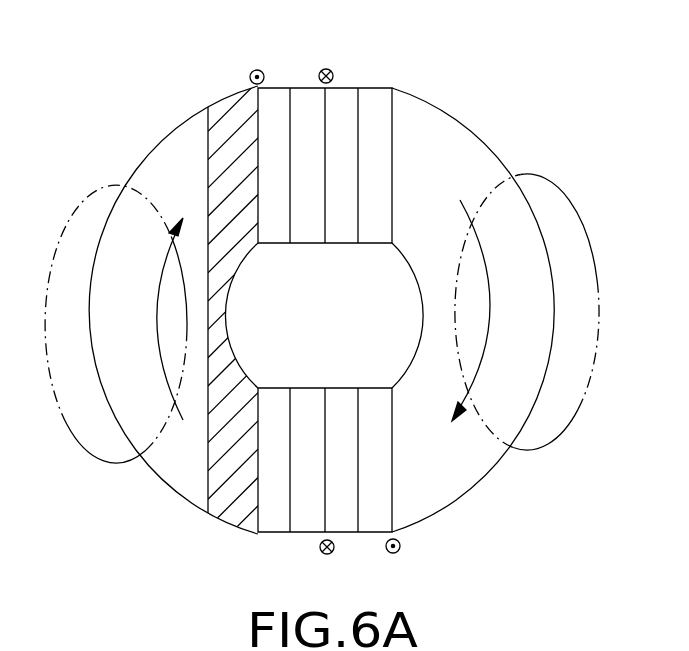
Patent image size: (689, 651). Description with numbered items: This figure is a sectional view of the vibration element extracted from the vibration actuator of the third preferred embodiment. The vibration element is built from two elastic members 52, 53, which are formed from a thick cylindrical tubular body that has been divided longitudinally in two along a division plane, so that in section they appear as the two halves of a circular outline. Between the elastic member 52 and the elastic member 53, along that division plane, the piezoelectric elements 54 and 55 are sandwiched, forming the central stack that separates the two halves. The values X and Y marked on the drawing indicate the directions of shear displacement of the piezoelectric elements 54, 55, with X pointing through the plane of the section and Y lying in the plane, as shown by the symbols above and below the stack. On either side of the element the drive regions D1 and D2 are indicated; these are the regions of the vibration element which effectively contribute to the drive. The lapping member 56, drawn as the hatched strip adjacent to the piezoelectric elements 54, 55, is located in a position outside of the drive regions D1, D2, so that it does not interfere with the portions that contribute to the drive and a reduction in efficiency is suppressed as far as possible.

The elastic member 52 is at (163, 162).
The elastic member 53 is at (482, 158).
The piezoelectric element 54 is at (302, 127).
The piezoelectric element 55 is at (375, 98).
The lapping member 56 is at (230, 515).
The direction of shear displacement X is at (255, 70).
The direction of shear displacement Y is at (330, 68).
The drive region D1 is at (582, 206).
The drive region D2 is at (72, 415).